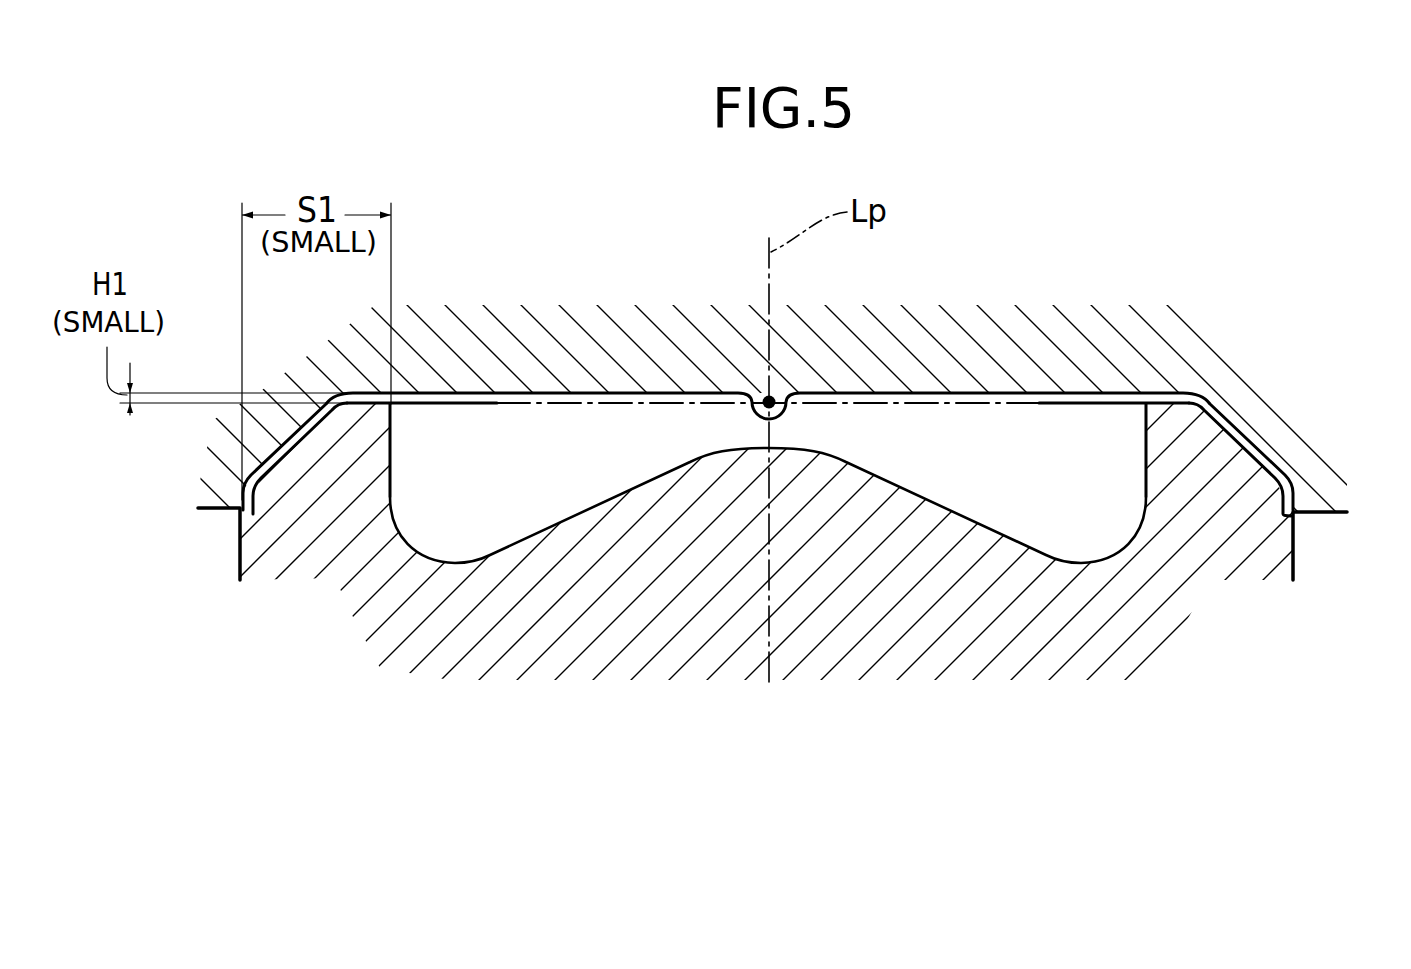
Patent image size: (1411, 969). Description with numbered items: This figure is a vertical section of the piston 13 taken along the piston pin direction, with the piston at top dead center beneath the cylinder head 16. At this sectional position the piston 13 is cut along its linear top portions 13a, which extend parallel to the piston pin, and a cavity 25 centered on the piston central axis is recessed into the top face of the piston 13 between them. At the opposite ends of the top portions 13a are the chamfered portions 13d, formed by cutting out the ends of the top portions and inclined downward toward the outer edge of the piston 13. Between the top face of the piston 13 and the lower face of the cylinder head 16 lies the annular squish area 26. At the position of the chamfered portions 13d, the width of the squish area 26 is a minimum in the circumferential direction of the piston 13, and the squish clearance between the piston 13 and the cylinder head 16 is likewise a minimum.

The piston 13 is at (705, 487).
The top portions 13a is at (368, 392).
The chamfered portions 13d is at (280, 460).
The cylinder head 16 is at (870, 365).
The cavity 25 is at (577, 480).
The squish area 26 is at (303, 437).